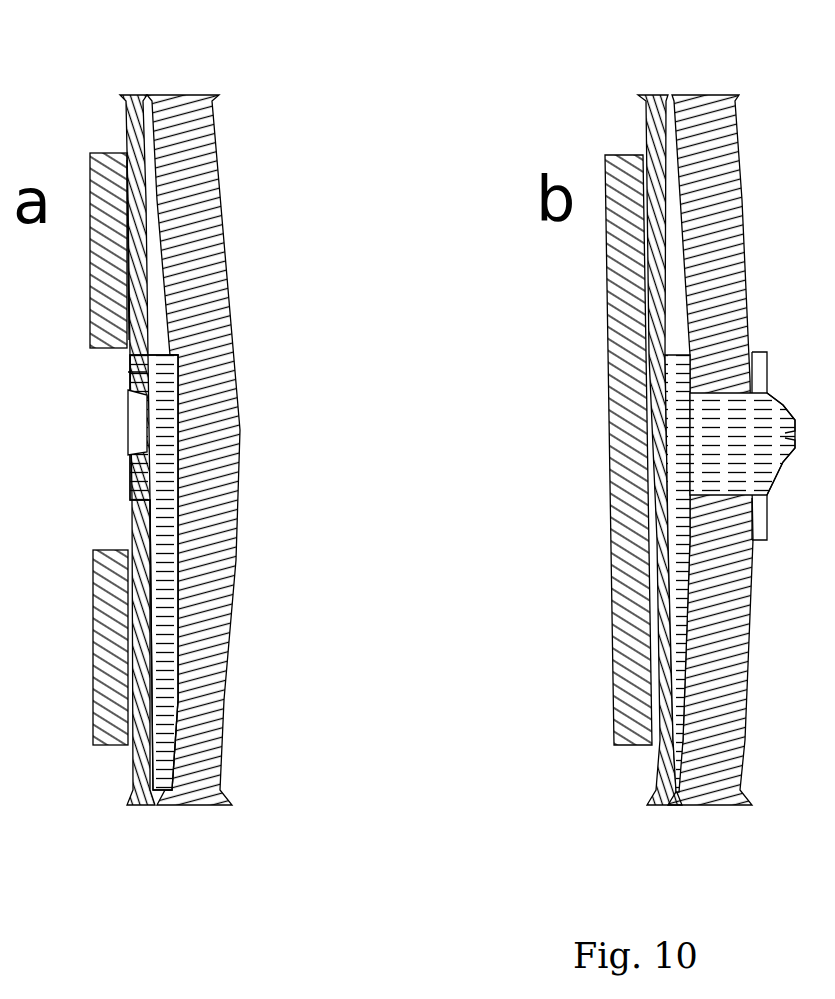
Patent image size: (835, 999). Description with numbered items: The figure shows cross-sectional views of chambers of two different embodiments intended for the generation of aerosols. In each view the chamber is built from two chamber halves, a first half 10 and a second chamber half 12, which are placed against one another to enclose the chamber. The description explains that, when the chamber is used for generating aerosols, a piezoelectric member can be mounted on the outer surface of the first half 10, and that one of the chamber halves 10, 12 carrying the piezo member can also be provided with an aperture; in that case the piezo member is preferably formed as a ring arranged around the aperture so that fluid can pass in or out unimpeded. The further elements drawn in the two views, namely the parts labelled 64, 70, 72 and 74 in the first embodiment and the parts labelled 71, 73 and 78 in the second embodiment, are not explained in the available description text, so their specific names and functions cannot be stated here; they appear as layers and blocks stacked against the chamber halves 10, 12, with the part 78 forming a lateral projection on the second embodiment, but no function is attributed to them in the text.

In FIG. 10a, the first half 10 is at (148, 93).
In FIG. 10a, the chamber half 12 is at (196, 93).
In FIG. 10a, the tab 64 is at (127, 447).
In FIG. 10a, the interface 70 is at (128, 272).
In FIG. 10a, the housing block 72 is at (101, 177).
In FIG. 10a, the connector 74 is at (161, 483).
In FIG. 10b, the foil layer 71 is at (653, 268).
In FIG. 10b, the housing block 73 is at (630, 155).
In FIG. 10b, the connector piece 78 is at (796, 421).